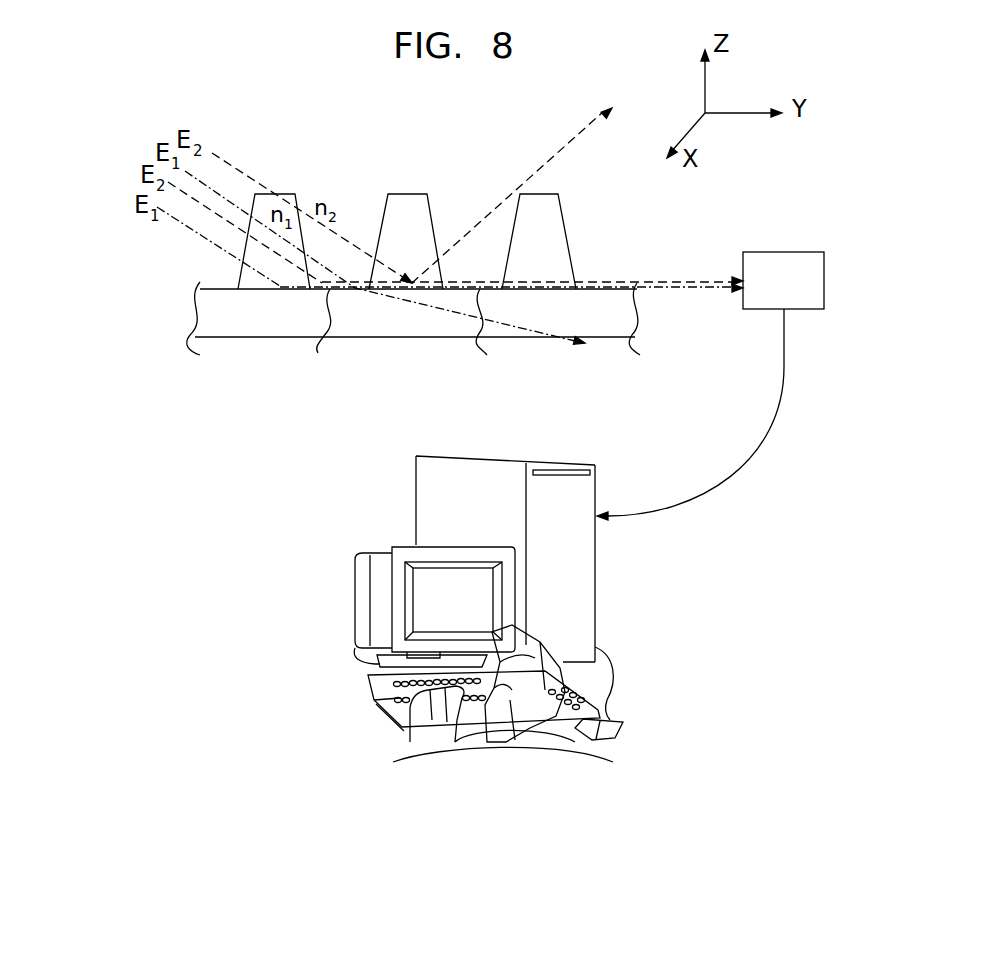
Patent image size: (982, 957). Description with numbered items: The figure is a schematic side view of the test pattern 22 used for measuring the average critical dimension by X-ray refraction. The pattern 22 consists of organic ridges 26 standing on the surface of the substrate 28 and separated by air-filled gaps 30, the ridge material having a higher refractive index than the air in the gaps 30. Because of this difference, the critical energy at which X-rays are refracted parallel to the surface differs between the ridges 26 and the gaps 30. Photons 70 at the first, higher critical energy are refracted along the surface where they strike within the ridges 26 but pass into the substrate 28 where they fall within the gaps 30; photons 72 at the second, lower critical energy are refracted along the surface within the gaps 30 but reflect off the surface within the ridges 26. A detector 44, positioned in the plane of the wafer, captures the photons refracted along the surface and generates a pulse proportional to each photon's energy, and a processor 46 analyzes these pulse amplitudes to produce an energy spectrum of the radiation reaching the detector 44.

The pattern 22 is at (136, 75).
The ridges 26 is at (277, 194).
The substrate 28 is at (250, 337).
The gaps 30 is at (416, 330).
The detector 44 is at (790, 252).
The processor 46 is at (416, 487).
The photons 70 is at (203, 177).
The photons 72 is at (228, 167).